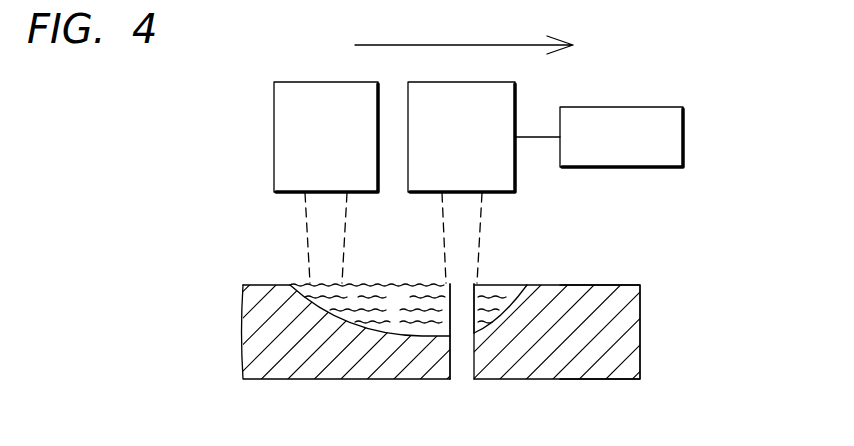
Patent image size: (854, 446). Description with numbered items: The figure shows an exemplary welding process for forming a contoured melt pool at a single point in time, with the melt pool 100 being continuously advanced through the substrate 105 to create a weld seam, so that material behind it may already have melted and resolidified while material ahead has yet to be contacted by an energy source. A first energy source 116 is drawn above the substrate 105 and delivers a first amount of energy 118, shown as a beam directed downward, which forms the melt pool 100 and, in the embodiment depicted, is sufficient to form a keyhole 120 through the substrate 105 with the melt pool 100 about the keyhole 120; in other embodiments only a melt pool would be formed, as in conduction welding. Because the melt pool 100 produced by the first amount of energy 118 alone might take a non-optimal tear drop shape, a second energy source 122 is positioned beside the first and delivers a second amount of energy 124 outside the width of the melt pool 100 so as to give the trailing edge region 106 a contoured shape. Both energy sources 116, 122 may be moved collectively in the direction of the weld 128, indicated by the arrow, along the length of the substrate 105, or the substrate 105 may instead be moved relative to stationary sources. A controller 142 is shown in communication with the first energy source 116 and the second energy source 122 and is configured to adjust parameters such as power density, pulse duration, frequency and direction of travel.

The melt pool 100 is at (256, 322).
The substrate 105 is at (620, 313).
The trailing edge region 106 is at (337, 330).
The first energy source 116 is at (517, 92).
The first amount of energy 118 is at (462, 285).
The keyhole 120 is at (462, 365).
The second energy source 122 is at (274, 97).
The second amount of energy 124 is at (308, 238).
The direction of the weld 128 is at (462, 45).
The controller 142 is at (686, 114).